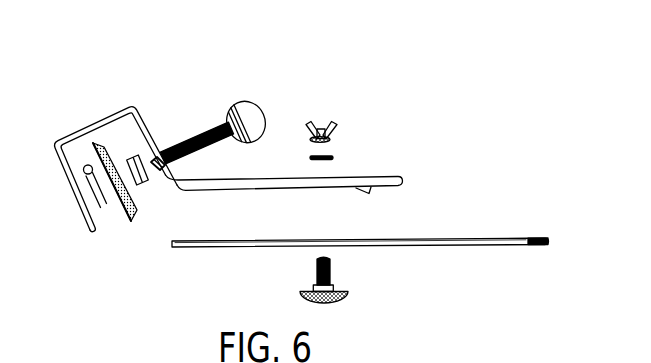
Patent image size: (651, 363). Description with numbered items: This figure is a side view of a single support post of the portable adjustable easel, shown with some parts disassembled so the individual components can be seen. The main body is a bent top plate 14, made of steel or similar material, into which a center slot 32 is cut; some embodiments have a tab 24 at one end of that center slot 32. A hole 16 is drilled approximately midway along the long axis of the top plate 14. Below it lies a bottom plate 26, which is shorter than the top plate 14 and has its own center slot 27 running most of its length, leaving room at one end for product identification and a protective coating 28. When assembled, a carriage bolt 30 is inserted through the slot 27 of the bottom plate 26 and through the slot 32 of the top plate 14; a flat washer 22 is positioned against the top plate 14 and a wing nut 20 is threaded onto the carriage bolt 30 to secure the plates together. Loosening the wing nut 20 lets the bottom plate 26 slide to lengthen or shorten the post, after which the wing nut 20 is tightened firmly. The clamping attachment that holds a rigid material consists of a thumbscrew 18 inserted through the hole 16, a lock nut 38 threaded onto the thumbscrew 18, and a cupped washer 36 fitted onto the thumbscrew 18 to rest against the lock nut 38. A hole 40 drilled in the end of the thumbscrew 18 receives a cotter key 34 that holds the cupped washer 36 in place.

The top plate 14 is at (98, 122).
The hole 16 is at (163, 148).
The thumbscrew 18 is at (236, 103).
The wing nut 20 is at (330, 122).
The flat washer 22 is at (336, 156).
The tab 24 is at (363, 194).
The bottom plate 26 is at (463, 247).
The center slot 27 is at (418, 248).
The protective coating 28 is at (538, 247).
The carriage bolt 30 is at (310, 287).
The center slot 32 is at (292, 190).
The cotter key 34 is at (110, 204).
The cupped washer 36 is at (130, 224).
The lock nut 38 is at (147, 186).
The hole 40 is at (160, 170).